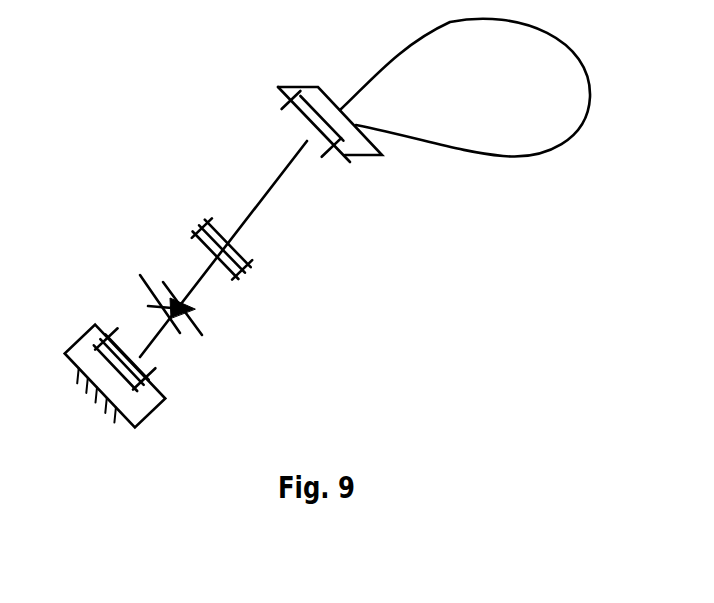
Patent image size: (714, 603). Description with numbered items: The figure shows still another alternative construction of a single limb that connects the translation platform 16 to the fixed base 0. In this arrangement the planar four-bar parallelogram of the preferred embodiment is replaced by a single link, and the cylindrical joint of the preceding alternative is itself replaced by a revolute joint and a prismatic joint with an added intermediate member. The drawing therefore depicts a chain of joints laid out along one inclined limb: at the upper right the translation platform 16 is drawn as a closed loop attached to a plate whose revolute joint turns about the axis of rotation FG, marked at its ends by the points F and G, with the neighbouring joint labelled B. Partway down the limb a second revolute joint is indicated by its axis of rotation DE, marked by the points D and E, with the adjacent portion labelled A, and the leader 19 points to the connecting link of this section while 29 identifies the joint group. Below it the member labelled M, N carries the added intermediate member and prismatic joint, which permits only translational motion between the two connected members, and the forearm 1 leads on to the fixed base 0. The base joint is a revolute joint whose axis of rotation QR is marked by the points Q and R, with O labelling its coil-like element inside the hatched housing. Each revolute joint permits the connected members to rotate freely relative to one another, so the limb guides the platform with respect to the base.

The translation platform 16 is at (428, 45).
The rod 19 is at (269, 190).
The coil assembly 29 is at (231, 269).
The forearm 1 is at (179, 326).
The fixed base 0 is at (126, 384).
The axis point F of revolute joint axis FG F is at (322, 135).
The coil B is at (330, 137).
The axis point G of revolute joint axis FG G is at (330, 147).
The axis point D of revolute joint axis DE D is at (218, 248).
The coil A is at (231, 248).
The axis point E of revolute joint axis DE E is at (196, 279).
The variable element line M is at (171, 303).
The variable element line N is at (153, 340).
The axis point Q of revolute joint axis QR Q is at (126, 360).
The coil in housing O is at (115, 376).
The axis point R of revolute joint axis QR R is at (126, 377).